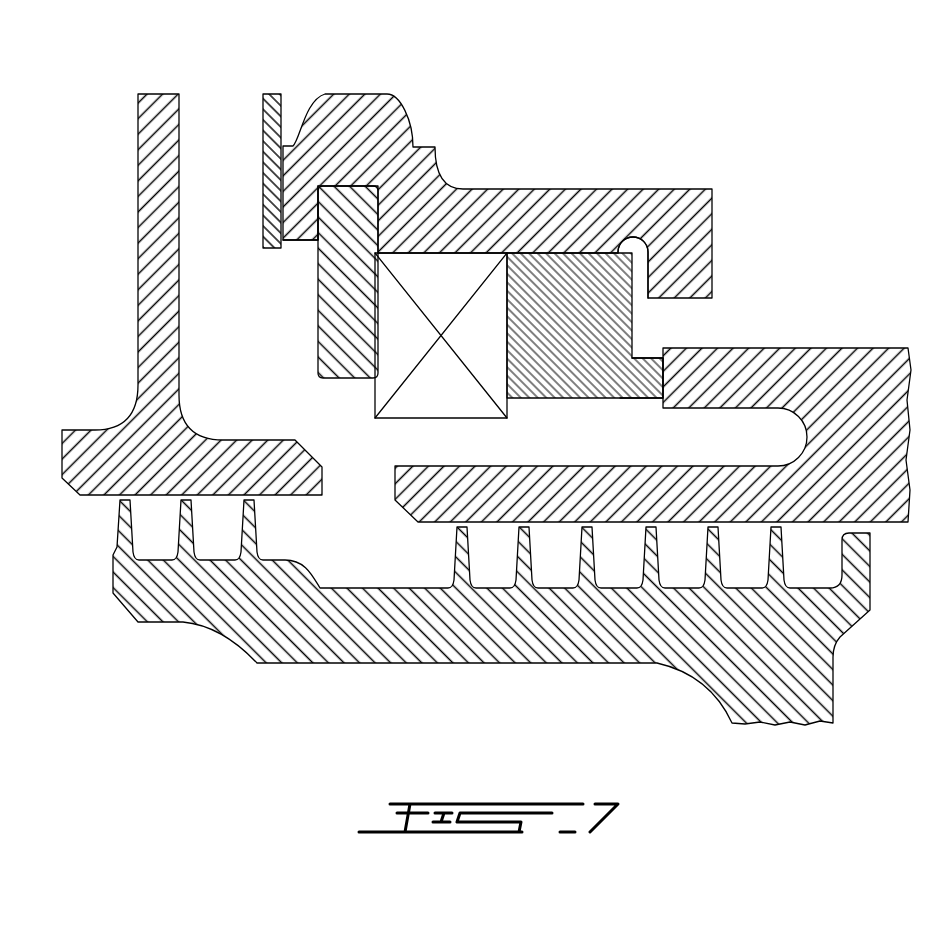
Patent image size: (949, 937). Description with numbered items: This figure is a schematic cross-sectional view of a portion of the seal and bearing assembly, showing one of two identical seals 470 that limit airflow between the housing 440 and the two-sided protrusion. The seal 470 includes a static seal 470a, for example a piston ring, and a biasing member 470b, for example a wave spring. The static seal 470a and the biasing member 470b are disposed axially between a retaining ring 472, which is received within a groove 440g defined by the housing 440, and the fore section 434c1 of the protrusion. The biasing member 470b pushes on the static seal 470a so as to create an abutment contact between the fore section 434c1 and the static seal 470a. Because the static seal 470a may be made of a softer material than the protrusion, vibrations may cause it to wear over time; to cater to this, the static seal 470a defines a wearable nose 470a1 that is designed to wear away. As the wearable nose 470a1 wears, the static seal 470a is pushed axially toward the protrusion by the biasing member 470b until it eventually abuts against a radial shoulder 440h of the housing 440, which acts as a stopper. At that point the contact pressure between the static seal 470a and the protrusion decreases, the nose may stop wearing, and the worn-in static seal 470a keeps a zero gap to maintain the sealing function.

The housing 440 is at (535, 165).
The groove 440g is at (350, 219).
The radial shoulder 440h is at (660, 277).
The retaining ring 472 is at (352, 219).
The seal 470 is at (503, 410).
The static seal 470a is at (651, 358).
The wearable nose 470a1 is at (640, 398).
The biasing member 470b is at (400, 418).
The fore section 434c1 is at (822, 347).